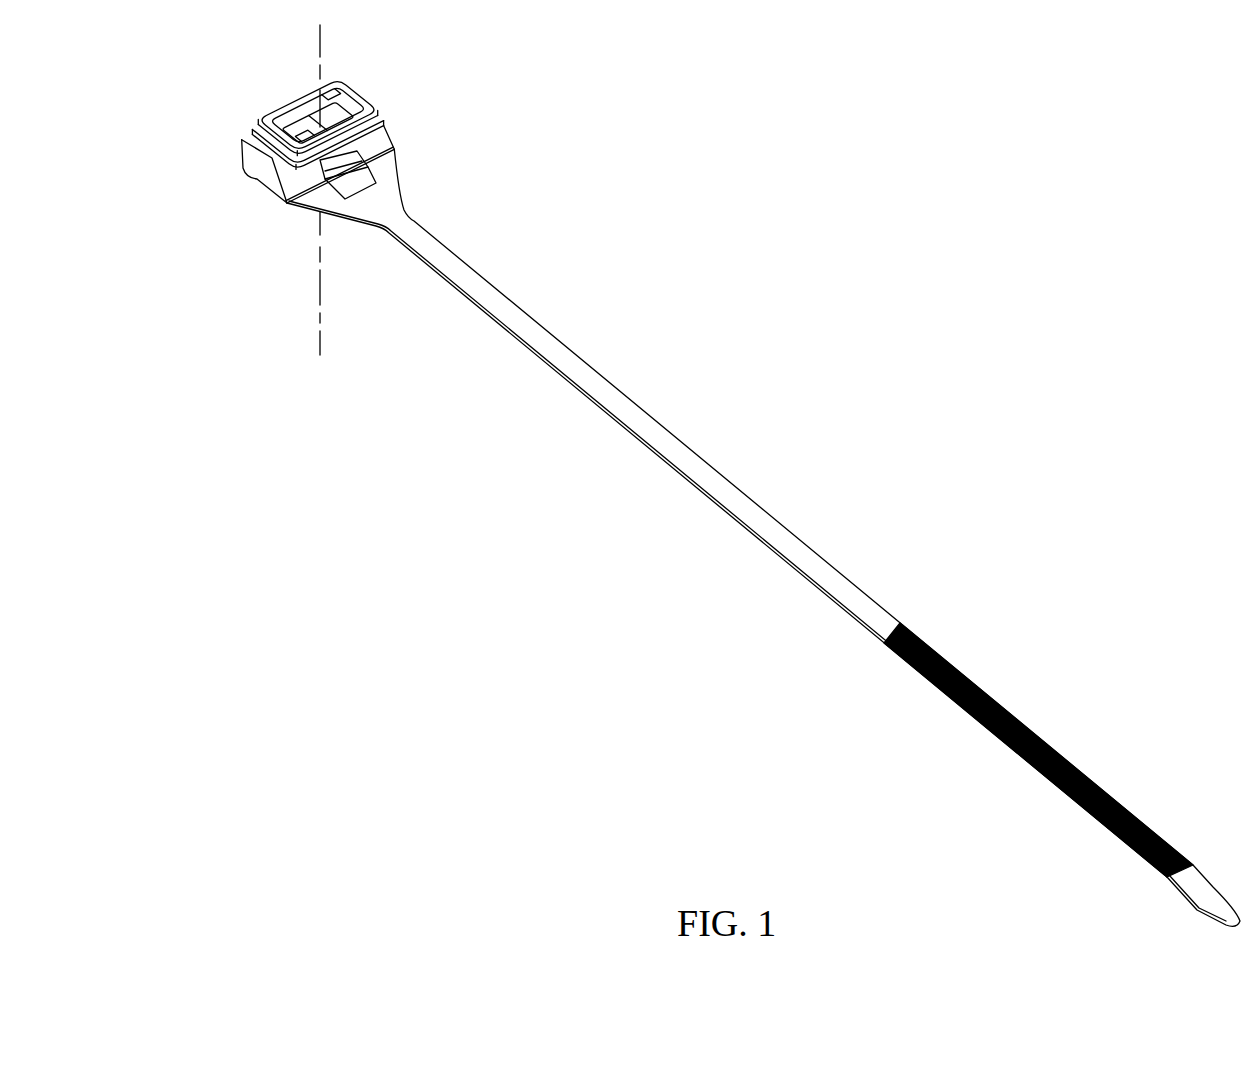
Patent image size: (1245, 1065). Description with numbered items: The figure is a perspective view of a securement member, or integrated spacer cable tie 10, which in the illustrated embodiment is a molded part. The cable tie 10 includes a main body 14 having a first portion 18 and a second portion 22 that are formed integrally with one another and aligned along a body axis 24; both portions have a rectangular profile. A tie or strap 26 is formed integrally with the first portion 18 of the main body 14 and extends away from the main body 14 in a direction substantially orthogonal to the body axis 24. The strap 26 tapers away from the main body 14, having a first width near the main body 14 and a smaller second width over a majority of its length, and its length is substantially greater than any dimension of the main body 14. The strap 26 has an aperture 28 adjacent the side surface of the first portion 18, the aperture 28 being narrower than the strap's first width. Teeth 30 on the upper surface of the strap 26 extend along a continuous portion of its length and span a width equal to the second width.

The integrated spacer cable tie 10 is at (707, 475).
The main body 14 is at (317, 190).
The first portion 18 is at (390, 130).
The second portion 22 is at (255, 130).
The body axis 24 is at (317, 56).
The strap 26 is at (763, 537).
The aperture 28 is at (349, 189).
The teeth 30 is at (993, 699).